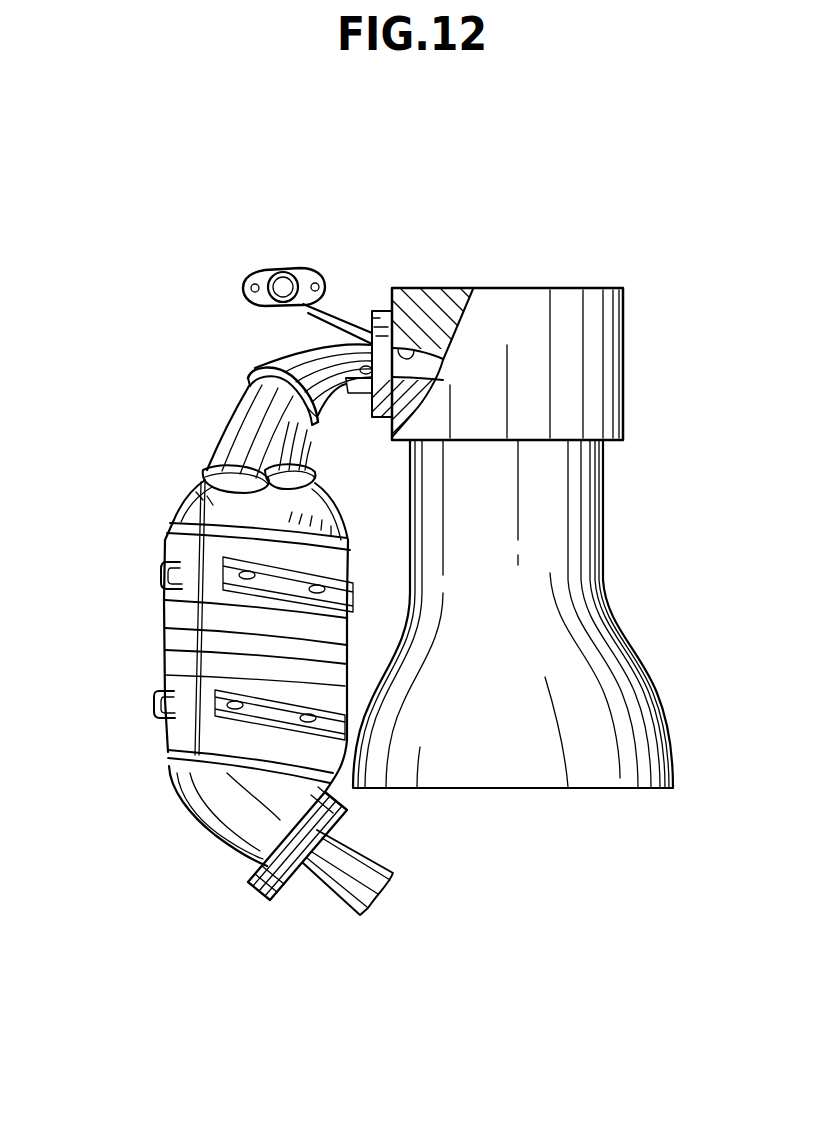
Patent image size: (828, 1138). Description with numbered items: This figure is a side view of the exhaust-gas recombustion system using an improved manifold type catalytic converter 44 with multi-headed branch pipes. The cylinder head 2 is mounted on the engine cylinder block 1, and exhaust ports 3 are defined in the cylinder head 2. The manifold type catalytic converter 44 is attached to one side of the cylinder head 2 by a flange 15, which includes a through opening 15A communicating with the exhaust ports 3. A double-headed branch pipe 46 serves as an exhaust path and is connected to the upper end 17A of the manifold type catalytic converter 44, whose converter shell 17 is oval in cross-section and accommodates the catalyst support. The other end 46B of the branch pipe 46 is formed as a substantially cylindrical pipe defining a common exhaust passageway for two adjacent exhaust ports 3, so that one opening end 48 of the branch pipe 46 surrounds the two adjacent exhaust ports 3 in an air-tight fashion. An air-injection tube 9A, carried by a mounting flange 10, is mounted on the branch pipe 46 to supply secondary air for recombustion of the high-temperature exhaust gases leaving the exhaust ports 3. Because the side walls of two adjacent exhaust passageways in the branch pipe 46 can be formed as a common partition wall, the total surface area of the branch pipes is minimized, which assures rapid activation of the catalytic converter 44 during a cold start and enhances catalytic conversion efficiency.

The engine cylinder block 1 is at (592, 542).
The cylinder head 2 is at (597, 388).
The exhaust ports 3 is at (437, 303).
The air-injection tube 9A is at (331, 306).
The tube mounting flange 10 is at (278, 274).
The flange 15 is at (380, 307).
The through opening 15A is at (362, 398).
The converter shell 17 is at (177, 661).
The upper end of manifold type catalytic converter 17A is at (328, 520).
The manifold type catalytic converter 44 is at (163, 545).
The double-headed branch pipe 46 is at (268, 367).
The other end of branch pipe 46B is at (229, 443).
The opening end of branch pipe 48 is at (280, 355).